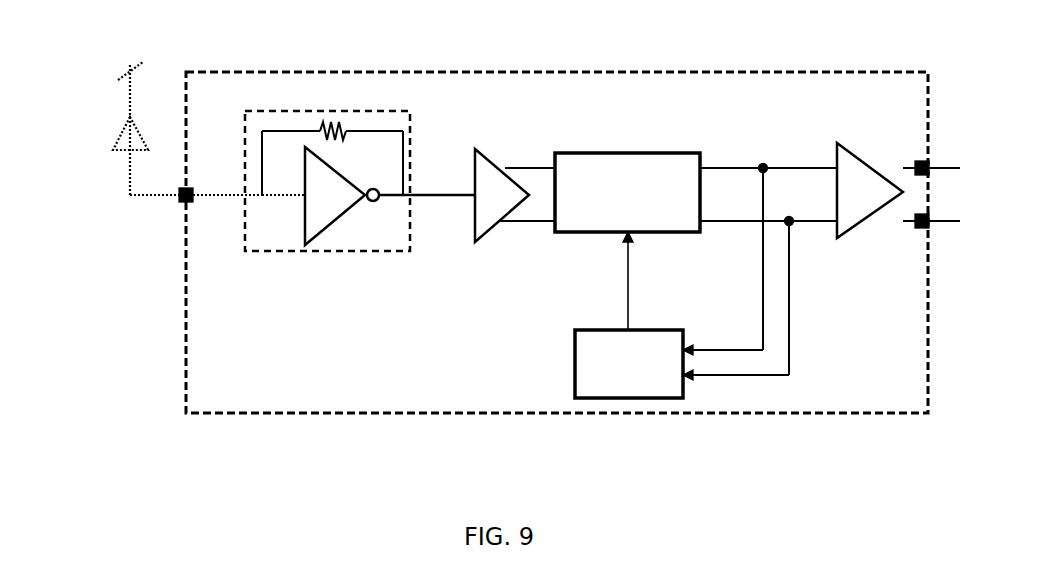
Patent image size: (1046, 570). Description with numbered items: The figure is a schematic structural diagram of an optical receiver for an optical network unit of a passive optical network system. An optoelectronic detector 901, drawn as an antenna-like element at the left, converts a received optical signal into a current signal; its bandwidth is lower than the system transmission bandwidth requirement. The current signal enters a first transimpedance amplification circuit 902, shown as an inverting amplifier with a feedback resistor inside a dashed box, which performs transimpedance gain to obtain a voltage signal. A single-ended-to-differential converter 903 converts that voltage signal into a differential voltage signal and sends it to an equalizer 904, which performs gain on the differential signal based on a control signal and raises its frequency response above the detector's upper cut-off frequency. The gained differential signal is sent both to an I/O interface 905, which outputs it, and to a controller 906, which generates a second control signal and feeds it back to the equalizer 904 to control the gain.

The optoelectronic detector 901 is at (125, 128).
The first transimpedance amplification circuit 902 is at (328, 108).
The single-ended-to-differential converter 903 is at (486, 148).
The equalizer 904 is at (645, 151).
The I/O interface 905 is at (853, 156).
The controller 906 is at (637, 398).